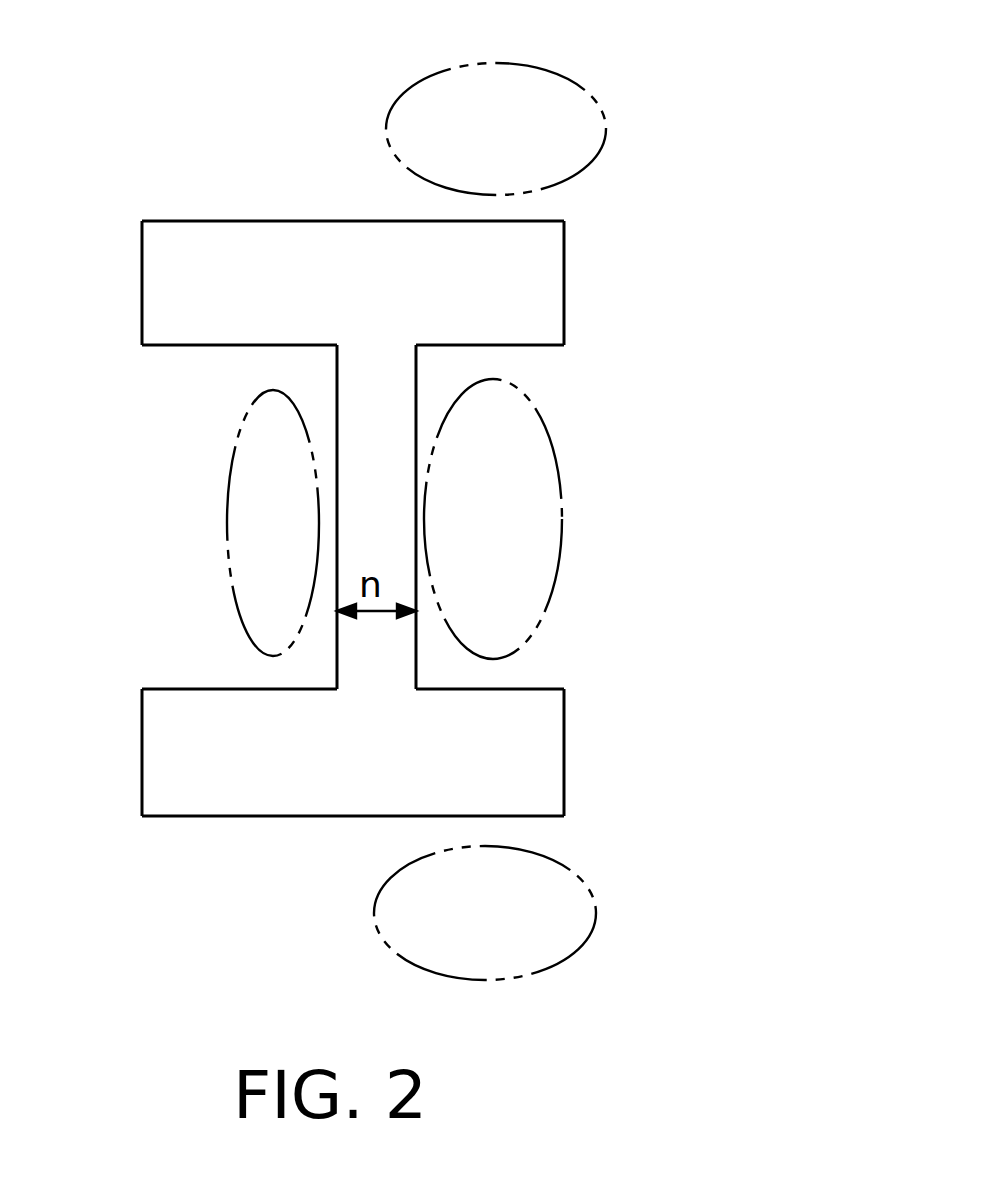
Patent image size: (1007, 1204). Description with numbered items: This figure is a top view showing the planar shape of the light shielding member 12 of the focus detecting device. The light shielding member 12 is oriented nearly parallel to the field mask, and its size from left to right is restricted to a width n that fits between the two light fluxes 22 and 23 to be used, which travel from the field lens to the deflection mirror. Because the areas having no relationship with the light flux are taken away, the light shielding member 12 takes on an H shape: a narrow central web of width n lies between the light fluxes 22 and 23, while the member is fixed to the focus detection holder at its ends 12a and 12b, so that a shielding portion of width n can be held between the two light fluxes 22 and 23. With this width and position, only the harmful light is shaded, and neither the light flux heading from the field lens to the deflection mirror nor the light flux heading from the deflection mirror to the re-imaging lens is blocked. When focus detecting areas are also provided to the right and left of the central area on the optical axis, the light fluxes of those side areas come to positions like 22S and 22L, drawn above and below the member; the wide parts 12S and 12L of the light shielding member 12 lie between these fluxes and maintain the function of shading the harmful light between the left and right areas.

The light shielding member 12 is at (359, 523).
The wide part of light shielding member 12S is at (401, 251).
The wide part of light shielding member 12L is at (430, 778).
The end of light shielding member 12a is at (142, 273).
The end of light shielding member 12b is at (565, 280).
The light flux 22 is at (543, 550).
The light flux of side area 22S is at (548, 92).
The light flux of side area 22L is at (558, 950).
The light flux 23 is at (243, 560).